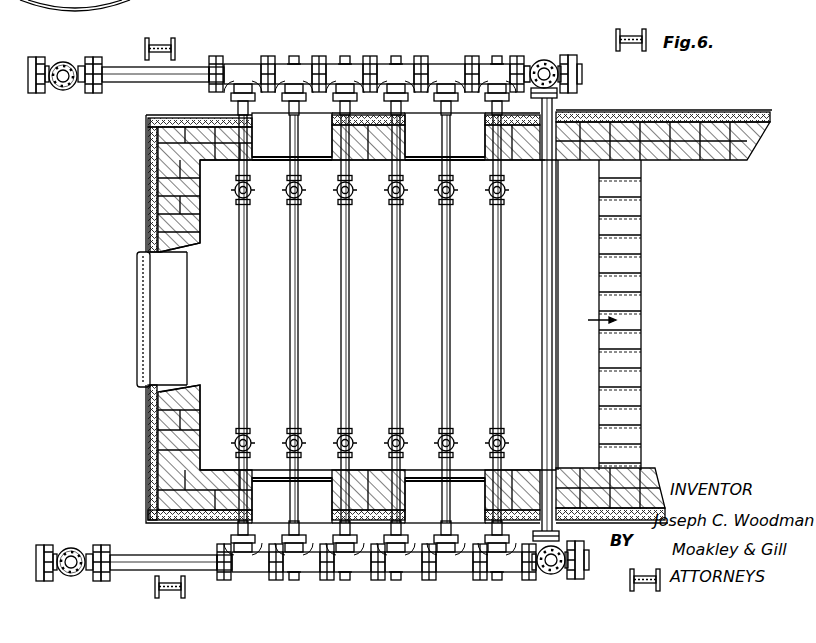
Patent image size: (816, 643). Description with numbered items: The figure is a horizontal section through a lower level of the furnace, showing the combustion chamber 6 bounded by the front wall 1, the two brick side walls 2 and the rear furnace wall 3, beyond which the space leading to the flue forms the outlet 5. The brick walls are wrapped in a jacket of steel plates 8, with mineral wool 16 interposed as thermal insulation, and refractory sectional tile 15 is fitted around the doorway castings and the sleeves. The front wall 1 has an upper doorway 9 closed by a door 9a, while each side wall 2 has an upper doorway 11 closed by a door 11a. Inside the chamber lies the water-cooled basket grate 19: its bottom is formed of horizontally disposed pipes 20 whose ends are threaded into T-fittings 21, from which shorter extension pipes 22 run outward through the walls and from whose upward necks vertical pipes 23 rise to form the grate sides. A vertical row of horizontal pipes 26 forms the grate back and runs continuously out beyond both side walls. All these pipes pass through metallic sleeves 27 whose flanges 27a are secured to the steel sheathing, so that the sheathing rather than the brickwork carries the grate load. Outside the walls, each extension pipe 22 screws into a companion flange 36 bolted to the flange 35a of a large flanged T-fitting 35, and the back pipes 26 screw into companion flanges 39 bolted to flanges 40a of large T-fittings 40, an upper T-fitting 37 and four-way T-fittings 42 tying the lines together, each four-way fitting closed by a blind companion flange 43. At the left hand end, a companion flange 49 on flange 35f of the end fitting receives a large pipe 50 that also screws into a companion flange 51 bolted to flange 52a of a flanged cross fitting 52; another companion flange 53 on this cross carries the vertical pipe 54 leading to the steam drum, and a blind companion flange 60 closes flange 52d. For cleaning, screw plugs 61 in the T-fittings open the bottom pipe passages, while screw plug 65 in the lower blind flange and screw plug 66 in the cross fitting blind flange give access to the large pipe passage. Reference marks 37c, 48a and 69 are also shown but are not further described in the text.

The front wall 1 is at (170, 186).
The side walls 2 is at (442, 317).
The rear furnace wall 3 is at (600, 374).
The outlet 5 is at (593, 321).
The combustion chamber 6 is at (378, 315).
The jacket of steel plates 8 is at (165, 118).
The upper doorway 9 is at (185, 318).
The door 9a is at (138, 295).
The upper doorways 11 is at (330, 162).
The doors 11a is at (368, 318).
The refractory sectional tile 15 is at (196, 250).
The mineral wool 16 is at (165, 116).
The basket grate 19 is at (298, 343).
The horizontally disposed pipes 20 is at (248, 275).
The T-fittings 21 is at (252, 204).
The extension pipes 22 is at (236, 98).
The vertical pipes 23 is at (252, 192).
The pipes 26 is at (553, 270).
The metallic sleeves 27 is at (573, 315).
The flanges 27a is at (512, 162).
The flanged T-fittings 35 is at (248, 66).
The flange 35a is at (266, 56).
The left hand flange 35f is at (214, 58).
The companion flange 36 is at (368, 317).
The T-fitting 37 is at (242, 9).
The fitting 37c is at (209, 11).
The companion flanges 39 is at (560, 93).
The T-fittings 40 is at (548, 60).
The flanges 40a is at (580, 78).
The four-way T-fittings 42 is at (563, 55).
The blind companion flange 43 is at (578, 56).
The fitting 48a is at (141, 16).
The companion flange 49 is at (210, 92).
The pipe 50 is at (118, 82).
The companion flange 51 is at (96, 64).
The flanged cross fitting 52 is at (86, 57).
The flange 52a is at (97, 57).
The flange 52d is at (38, 58).
The companion flange 53 is at (58, 62).
The vertical pipe 54 is at (60, 92).
The blind companion flange 60 is at (36, 90).
The screw plugs 61 is at (298, 56).
The screw plug 65 is at (582, 74).
The screw plug 66 is at (28, 74).
The fitting 69 is at (532, 5).